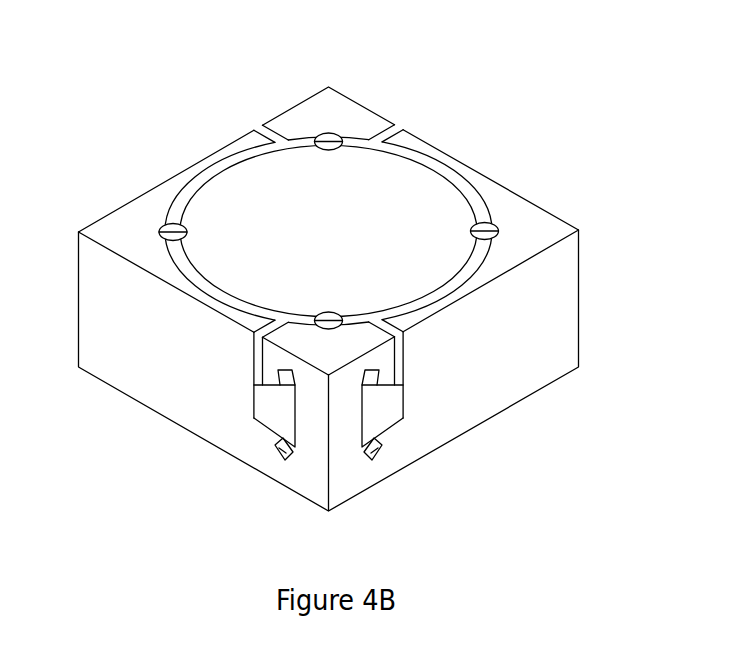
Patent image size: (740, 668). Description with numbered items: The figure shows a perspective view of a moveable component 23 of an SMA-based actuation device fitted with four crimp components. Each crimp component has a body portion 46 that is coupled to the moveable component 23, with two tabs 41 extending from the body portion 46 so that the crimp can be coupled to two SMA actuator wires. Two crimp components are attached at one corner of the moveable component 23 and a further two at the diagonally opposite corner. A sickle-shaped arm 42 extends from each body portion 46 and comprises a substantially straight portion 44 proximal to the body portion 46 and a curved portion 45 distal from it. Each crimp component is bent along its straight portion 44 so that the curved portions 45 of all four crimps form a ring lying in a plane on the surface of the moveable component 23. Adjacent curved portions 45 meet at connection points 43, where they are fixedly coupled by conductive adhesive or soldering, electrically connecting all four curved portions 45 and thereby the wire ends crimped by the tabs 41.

The moveable component 23 is at (578, 268).
The tabs 41 is at (282, 462).
The arm 42 is at (232, 142).
The connection points 43 is at (330, 134).
The straight portion 44 is at (253, 357).
The curved portion 45 is at (210, 176).
The body portion 46 is at (263, 403).